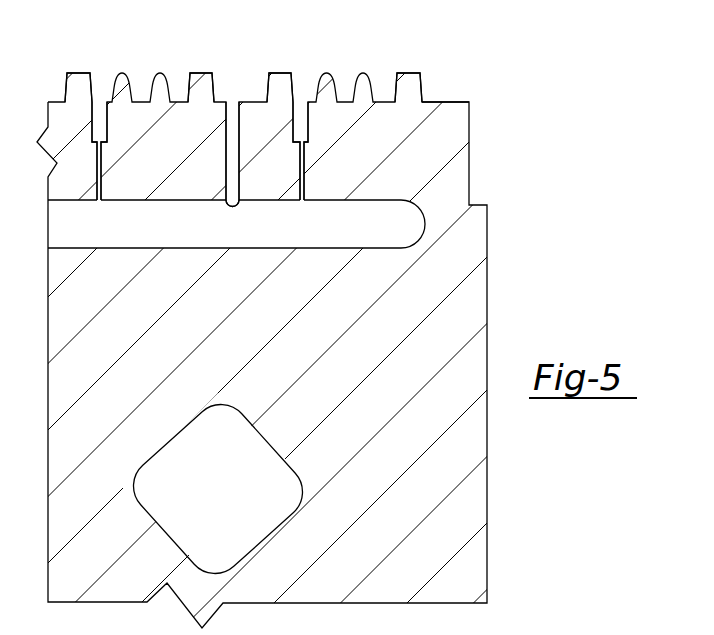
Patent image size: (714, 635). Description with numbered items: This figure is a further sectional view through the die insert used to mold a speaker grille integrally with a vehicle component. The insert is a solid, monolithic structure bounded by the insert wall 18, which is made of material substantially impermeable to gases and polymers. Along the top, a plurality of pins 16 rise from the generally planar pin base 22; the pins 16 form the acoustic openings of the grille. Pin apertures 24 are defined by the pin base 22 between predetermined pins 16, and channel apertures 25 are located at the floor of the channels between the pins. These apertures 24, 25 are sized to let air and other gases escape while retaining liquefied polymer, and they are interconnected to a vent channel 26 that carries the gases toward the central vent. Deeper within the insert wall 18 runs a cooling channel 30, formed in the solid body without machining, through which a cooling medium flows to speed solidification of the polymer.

The pins 16 is at (203, 72).
The insert wall 18 is at (487, 506).
The pin base 22 is at (448, 101).
The pin apertures 24 is at (232, 101).
The channel apertures 25 is at (98, 140).
The vent channel 26 is at (200, 234).
The cooling channel 30 is at (207, 500).